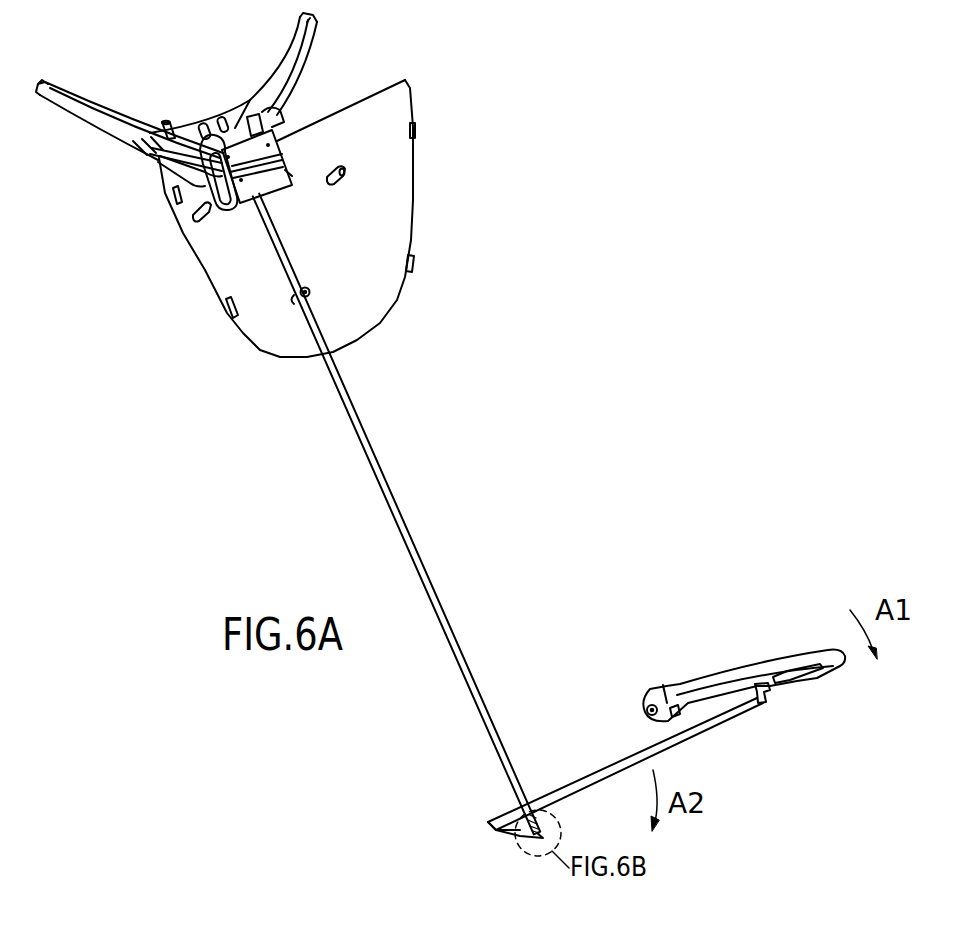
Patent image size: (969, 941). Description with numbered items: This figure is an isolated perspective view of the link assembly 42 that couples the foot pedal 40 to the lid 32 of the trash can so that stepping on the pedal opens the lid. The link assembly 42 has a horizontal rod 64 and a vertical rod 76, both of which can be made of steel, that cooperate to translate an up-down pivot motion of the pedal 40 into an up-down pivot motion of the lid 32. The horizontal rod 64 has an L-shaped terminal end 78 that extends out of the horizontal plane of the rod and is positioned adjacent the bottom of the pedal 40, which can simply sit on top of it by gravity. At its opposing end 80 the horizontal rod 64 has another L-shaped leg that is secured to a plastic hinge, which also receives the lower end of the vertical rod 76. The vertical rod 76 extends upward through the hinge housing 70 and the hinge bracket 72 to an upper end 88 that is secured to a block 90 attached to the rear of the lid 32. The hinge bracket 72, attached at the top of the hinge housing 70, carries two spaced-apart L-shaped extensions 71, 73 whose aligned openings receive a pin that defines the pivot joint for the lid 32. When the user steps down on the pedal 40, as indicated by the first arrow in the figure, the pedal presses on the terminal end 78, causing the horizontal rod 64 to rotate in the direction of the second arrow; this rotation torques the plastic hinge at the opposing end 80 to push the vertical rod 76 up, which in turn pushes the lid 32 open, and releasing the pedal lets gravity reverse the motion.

The lid 32 is at (316, 32).
The foot pedal 40 is at (780, 652).
The link assembly 42 is at (519, 478).
The horizontal rod 64 is at (682, 740).
The hinge housing 70 is at (400, 205).
The L-shaped extension 71 is at (187, 131).
The hinge bracket 72 is at (288, 188).
The L-shaped extension 73 is at (278, 113).
The vertical rod 76 is at (378, 463).
The terminal end 78 is at (768, 692).
The opposing end 80 is at (490, 832).
The upper end 88 is at (222, 113).
The block 90 is at (207, 120).